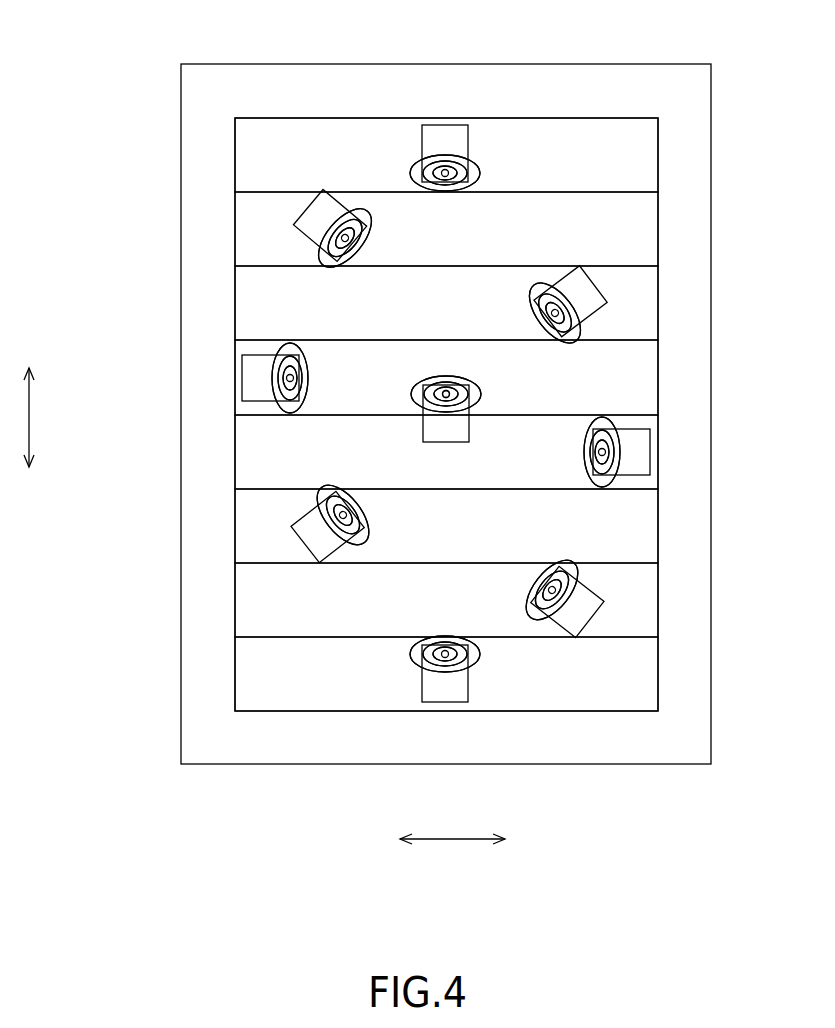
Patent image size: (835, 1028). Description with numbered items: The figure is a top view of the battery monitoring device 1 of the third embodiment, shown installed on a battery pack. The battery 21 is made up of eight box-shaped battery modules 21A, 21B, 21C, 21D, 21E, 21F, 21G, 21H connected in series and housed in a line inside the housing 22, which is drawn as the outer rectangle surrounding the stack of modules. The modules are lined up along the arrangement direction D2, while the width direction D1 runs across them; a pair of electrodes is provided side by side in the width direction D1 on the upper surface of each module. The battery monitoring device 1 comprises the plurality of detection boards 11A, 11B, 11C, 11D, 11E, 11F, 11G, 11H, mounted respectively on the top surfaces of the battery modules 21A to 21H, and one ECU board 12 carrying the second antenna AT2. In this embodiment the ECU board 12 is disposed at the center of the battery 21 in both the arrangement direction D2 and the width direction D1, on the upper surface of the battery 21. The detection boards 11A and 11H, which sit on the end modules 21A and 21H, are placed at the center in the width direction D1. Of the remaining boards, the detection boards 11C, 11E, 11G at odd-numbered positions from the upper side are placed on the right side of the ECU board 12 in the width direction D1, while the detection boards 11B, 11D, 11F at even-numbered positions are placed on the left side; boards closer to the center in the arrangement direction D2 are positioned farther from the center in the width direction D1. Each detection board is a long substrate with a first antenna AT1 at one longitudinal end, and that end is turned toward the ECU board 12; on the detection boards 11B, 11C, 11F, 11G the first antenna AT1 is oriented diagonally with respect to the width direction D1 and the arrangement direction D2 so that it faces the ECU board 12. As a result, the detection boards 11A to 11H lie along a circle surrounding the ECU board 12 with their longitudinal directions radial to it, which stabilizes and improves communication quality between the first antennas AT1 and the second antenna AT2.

The battery monitoring device 1 is at (613, 863).
The detection board 11A is at (460, 145).
The detection board 11B is at (316, 212).
The detection board 11C is at (590, 315).
The detection board 11D is at (245, 362).
The detection board 11E is at (645, 436).
The detection board 11F is at (300, 543).
The detection board 11G is at (590, 590).
The detection board 11H is at (462, 692).
The ECU board 12 is at (440, 435).
The first antenna AT1 is at (447, 170).
The second antenna AT2 is at (446, 388).
The battery 21 is at (588, 716).
The battery module 21A is at (640, 155).
The battery module 21B is at (255, 258).
The battery module 21C is at (634, 273).
The battery module 21D is at (255, 411).
The battery module 21E is at (645, 483).
The battery module 21F is at (255, 498).
The battery module 21G is at (635, 630).
The battery module 21H is at (640, 672).
The housing 22 is at (700, 708).
The width direction D1 is at (455, 845).
The arrangement direction D2 is at (32, 418).